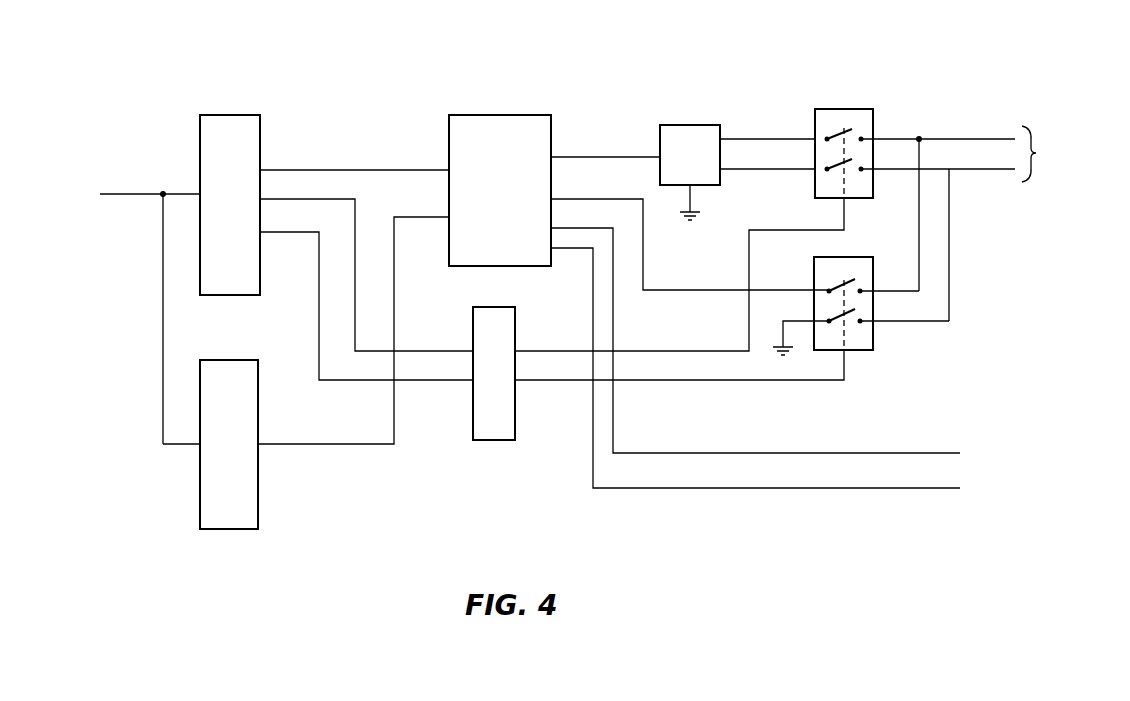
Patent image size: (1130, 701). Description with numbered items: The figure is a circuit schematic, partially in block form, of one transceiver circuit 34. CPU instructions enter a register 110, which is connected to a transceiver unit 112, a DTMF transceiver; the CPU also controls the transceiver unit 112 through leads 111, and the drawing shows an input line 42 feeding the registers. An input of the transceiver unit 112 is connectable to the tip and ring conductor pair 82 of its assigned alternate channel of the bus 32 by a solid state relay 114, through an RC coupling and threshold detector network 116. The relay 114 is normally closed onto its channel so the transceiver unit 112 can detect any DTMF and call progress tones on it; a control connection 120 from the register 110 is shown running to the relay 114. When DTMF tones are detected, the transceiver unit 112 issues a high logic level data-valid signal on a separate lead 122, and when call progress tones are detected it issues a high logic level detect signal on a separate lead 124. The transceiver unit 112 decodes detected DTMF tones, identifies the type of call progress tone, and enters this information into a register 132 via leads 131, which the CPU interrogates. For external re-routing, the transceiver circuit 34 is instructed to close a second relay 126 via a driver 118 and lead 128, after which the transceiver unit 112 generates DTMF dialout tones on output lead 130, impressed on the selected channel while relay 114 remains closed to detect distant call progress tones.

The bus 32 is at (1065, 154).
The transceiver circuit 34 is at (718, 91).
The input line 42 is at (123, 194).
The tip and ring conductor pair 82 is at (977, 139).
The register 110 is at (210, 296).
The leads 111 is at (328, 170).
The transceiver unit 112 is at (554, 190).
The solid state relay 114 is at (828, 109).
The RC coupling and threshold detector network 116 is at (737, 172).
The driver 118 is at (510, 441).
The switch control line 120 is at (667, 352).
The lead 122 is at (648, 452).
The lead 124 is at (686, 490).
The relay 126 is at (874, 337).
The lead 128 is at (750, 381).
The output lead 130 is at (697, 292).
The leads 131 is at (349, 446).
The register 132 is at (259, 514).